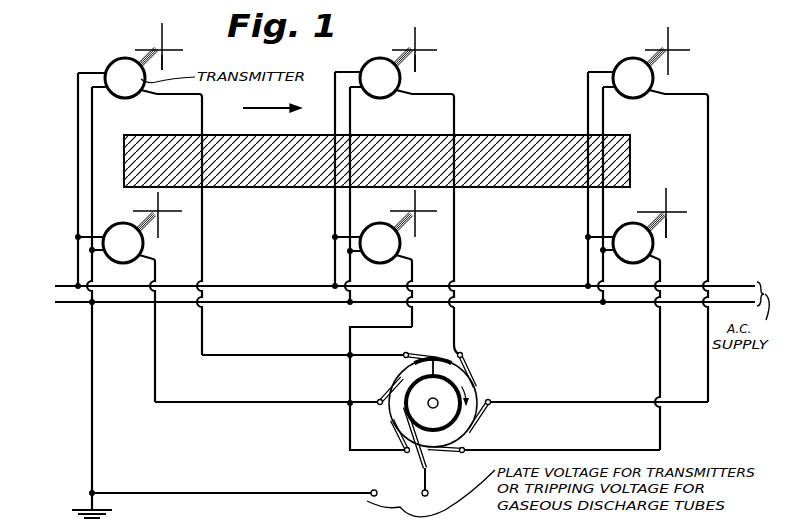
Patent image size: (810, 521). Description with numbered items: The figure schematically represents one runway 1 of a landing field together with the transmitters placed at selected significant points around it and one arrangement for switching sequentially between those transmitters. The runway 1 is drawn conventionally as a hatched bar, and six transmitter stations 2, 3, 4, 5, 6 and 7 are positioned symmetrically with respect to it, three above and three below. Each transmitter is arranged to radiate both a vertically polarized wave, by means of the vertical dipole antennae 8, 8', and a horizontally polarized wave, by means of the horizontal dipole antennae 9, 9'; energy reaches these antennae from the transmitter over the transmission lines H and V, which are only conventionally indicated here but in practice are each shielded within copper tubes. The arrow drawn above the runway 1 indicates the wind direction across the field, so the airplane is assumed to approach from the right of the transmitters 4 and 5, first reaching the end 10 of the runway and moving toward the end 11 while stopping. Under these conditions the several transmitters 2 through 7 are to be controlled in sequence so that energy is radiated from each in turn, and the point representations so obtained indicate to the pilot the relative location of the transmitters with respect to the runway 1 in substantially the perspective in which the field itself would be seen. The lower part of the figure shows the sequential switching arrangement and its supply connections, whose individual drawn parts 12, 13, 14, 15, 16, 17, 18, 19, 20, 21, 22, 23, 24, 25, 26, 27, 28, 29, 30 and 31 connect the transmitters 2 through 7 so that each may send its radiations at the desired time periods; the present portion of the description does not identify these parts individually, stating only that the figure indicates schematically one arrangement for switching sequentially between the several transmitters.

The runway 1 is at (527, 134).
The transmitter station 2 is at (107, 69).
The transmitter station 3 is at (382, 99).
The transmitter station 4 is at (633, 99).
The transmitter station 5 is at (626, 262).
The transmitter station 6 is at (378, 263).
The transmitter station 7 is at (118, 263).
The vertical dipole antenna 8 is at (423, 127).
The horizontal dipole antenna 9 is at (416, 122).
The vertical dipole antenna 8' is at (430, 147).
The horizontal dipole antenna 9' is at (391, 127).
The transmission line H is at (134, 49).
The transmission line V is at (400, 68).
The runway end 10 is at (640, 161).
The runway end 11 is at (119, 168).
The rotary distributor switch 12 is at (491, 392).
The A.C. supply bus lines 13 is at (405, 279).
The ground connection 14 is at (84, 508).
The plate voltage terminal 15 is at (374, 490).
The plate voltage terminal 16 is at (429, 493).
The rotating brush arm 17 is at (422, 461).
The brush connection 18 is at (411, 366).
The conducting segment 19 is at (448, 353).
The stationary contact 20 is at (418, 353).
The stationary contact 21 is at (466, 365).
The stationary contact 22 is at (484, 410).
The stationary contact 23 is at (440, 456).
The stationary contact 24 is at (402, 435).
The stationary contact 25 is at (385, 396).
The conductor 26 is at (268, 354).
The conductor 27 is at (458, 320).
The conductor 28 is at (633, 402).
The conductor 29 is at (637, 450).
The conductor 30 is at (350, 432).
The conductor 31 is at (219, 406).